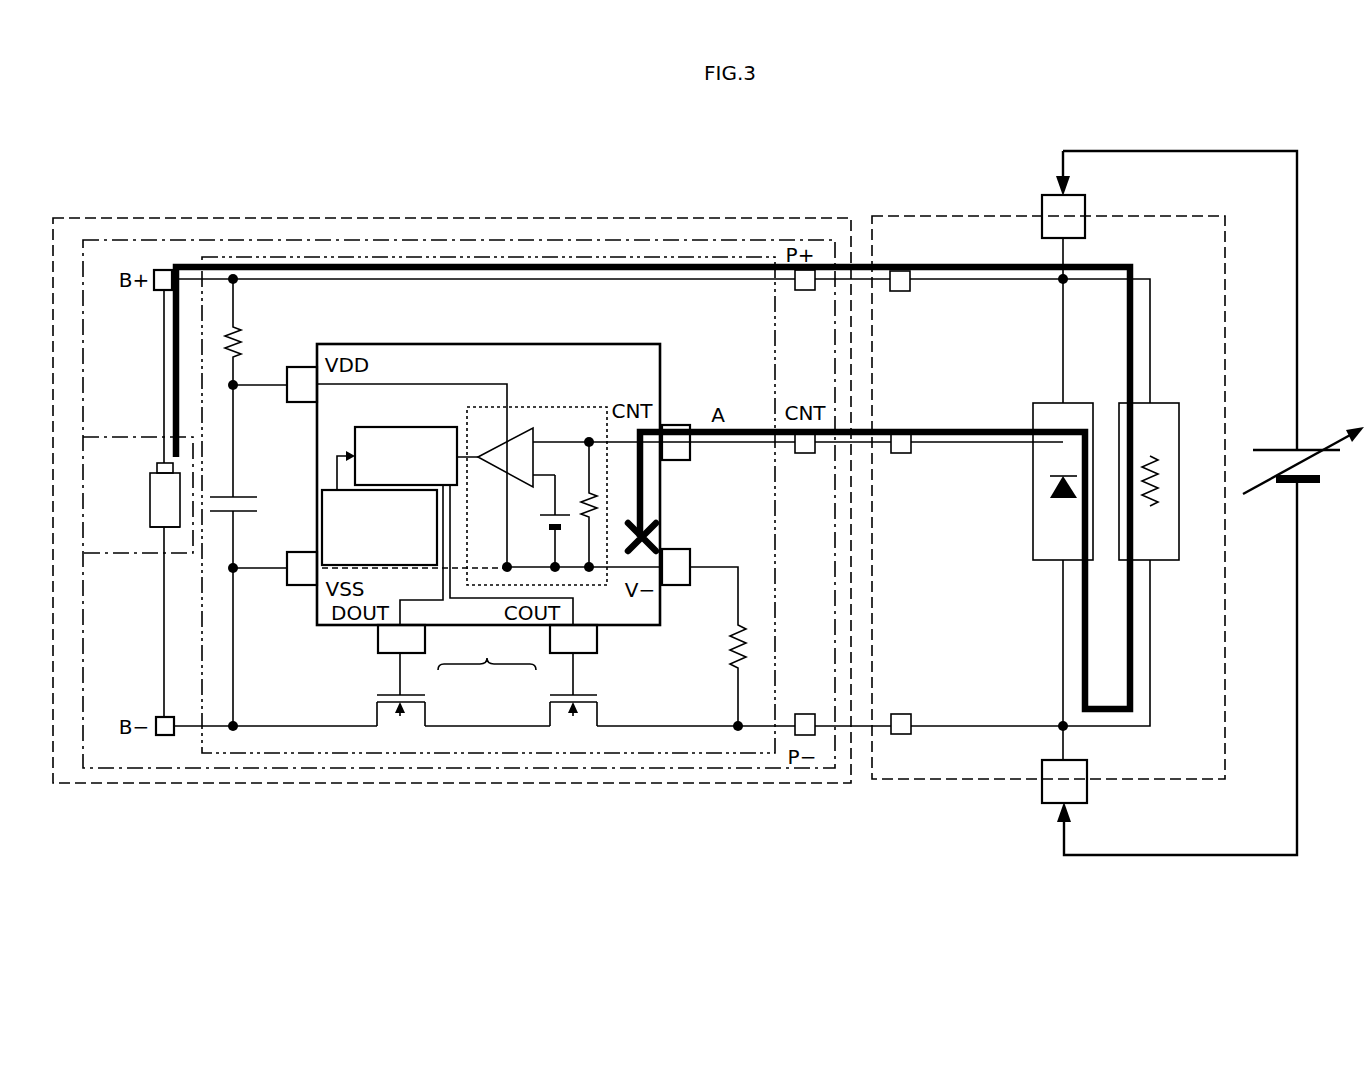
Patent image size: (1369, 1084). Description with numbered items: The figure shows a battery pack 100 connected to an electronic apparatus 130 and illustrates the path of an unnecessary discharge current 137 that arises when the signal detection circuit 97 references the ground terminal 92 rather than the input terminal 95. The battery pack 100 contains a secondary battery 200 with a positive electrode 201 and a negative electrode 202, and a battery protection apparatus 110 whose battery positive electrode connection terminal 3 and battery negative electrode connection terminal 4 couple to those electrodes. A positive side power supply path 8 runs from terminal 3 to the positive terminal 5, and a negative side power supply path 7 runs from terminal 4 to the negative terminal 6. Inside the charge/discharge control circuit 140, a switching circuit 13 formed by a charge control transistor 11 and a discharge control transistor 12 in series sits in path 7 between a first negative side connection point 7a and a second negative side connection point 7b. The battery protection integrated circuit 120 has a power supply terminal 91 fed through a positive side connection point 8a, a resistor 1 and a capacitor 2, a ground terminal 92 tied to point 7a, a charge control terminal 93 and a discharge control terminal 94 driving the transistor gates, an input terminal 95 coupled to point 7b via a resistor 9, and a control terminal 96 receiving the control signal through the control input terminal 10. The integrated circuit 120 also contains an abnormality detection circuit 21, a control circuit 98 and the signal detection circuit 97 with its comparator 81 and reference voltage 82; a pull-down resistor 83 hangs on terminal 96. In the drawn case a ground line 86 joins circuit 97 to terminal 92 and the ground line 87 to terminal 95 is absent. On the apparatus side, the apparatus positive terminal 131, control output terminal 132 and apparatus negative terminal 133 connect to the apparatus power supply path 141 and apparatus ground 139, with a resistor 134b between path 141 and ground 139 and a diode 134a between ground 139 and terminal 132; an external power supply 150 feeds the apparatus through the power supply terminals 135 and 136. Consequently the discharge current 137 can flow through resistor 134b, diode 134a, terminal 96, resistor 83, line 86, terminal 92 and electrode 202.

The resistor 1 is at (230, 330).
The capacitor 2 is at (248, 497).
The battery positive electrode connection terminal 3 is at (157, 290).
The battery negative electrode connection terminal 4 is at (165, 717).
The positive terminal 5 is at (805, 290).
The negative terminal 6 is at (805, 713).
The negative side power supply path 7 is at (283, 726).
The first negative side connection point 7a is at (240, 728).
The second negative side connection point 7b is at (733, 727).
The positive side power supply path 8 is at (335, 282).
The positive side connection point 8a is at (240, 281).
The resistor 9 is at (736, 668).
The control input terminal 10 is at (805, 453).
The charge control transistor 11 is at (550, 707).
The discharge control transistor 12 is at (425, 707).
The switching circuit 13 is at (487, 679).
The abnormality detection circuit 21 is at (385, 566).
The comparator 81 is at (509, 468).
The reference voltage 82 is at (552, 522).
The pull-down resistor 83 is at (589, 493).
The ground line 86 is at (487, 565).
The ground line 87 is at (630, 568).
The power supply terminal 91 is at (295, 367).
The ground terminal 92 is at (295, 552).
The charge control terminal 93 is at (597, 640).
The discharge control terminal 94 is at (378, 638).
The input terminal 95 is at (672, 549).
The control terminal 96 is at (672, 423).
The signal detection circuit 97 is at (548, 407).
The control circuit 98 is at (396, 426).
The battery pack 100 is at (478, 218).
The battery protection apparatus 110 is at (707, 240).
The battery protection integrated circuit 120 is at (580, 345).
The electronic apparatus 130 is at (905, 216).
The apparatus positive terminal 131 is at (900, 291).
The control output terminal 132 is at (903, 453).
The apparatus negative terminal 133 is at (901, 714).
The diode 134a is at (1043, 403).
The resistor 134b is at (1170, 403).
The power supply terminal 135 is at (1085, 195).
The power supply terminal 136 is at (1084, 762).
The unnecessary discharge current 137 is at (403, 265).
The apparatus ground 139 is at (972, 726).
The charge/discharge control circuit 140 is at (628, 257).
The apparatus power supply path 141 is at (984, 279).
The external power supply 150 is at (1262, 448).
The secondary battery 200 is at (150, 500).
The positive electrode 201 is at (157, 468).
The negative electrode 202 is at (150, 527).